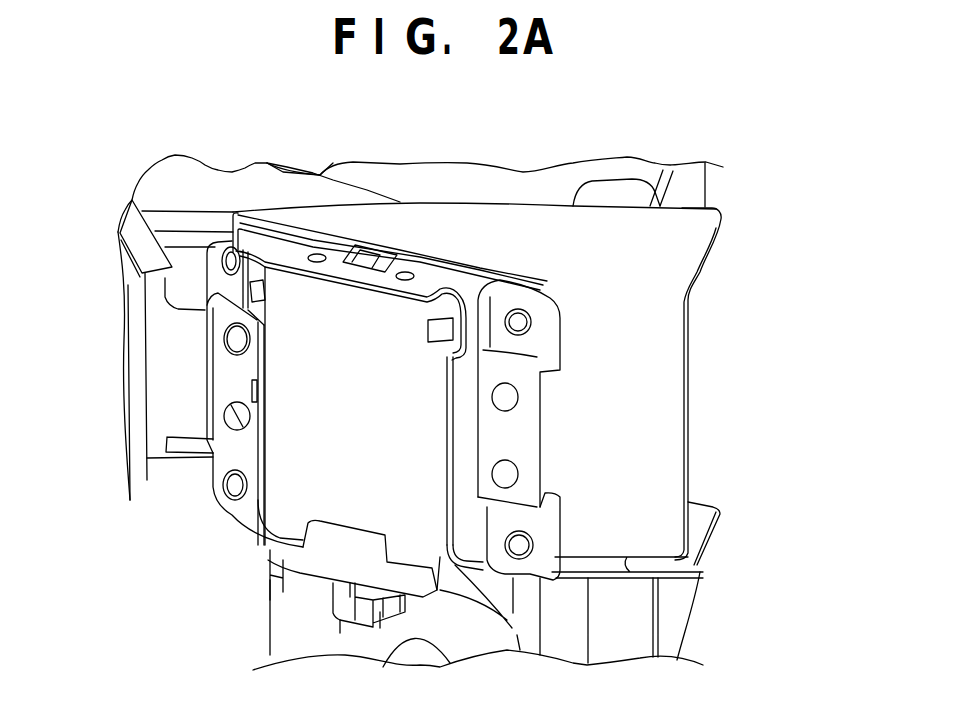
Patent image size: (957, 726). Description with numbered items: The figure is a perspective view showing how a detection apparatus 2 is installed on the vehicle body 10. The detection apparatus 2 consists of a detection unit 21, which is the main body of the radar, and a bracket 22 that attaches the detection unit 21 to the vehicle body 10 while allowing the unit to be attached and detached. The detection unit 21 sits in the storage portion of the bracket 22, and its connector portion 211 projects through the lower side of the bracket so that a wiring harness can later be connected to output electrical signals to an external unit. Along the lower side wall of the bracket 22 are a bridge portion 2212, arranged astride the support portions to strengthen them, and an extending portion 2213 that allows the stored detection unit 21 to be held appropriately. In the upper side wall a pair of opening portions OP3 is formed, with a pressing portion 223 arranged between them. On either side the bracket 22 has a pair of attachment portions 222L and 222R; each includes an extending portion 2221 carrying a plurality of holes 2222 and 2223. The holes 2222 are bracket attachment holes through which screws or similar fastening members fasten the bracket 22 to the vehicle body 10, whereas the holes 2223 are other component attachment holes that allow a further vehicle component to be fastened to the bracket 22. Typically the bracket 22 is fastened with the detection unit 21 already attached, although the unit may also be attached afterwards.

The vehicle body 10 is at (720, 208).
The detection apparatus 2 is at (139, 599).
The detection unit 21 is at (287, 503).
The bracket 22 is at (258, 530).
The opening portions OP3 is at (407, 270).
The pressing portion 223 is at (364, 245).
The attachment portion 222L is at (213, 327).
The attachment portion 222R is at (809, 416).
The extending portion 2221 is at (520, 322).
The holes 2222 is at (553, 313).
The holes 2223 is at (507, 397).
The bridge portion 2212 is at (275, 558).
The extending portion 2213 is at (333, 543).
The connector portion 211 is at (387, 620).